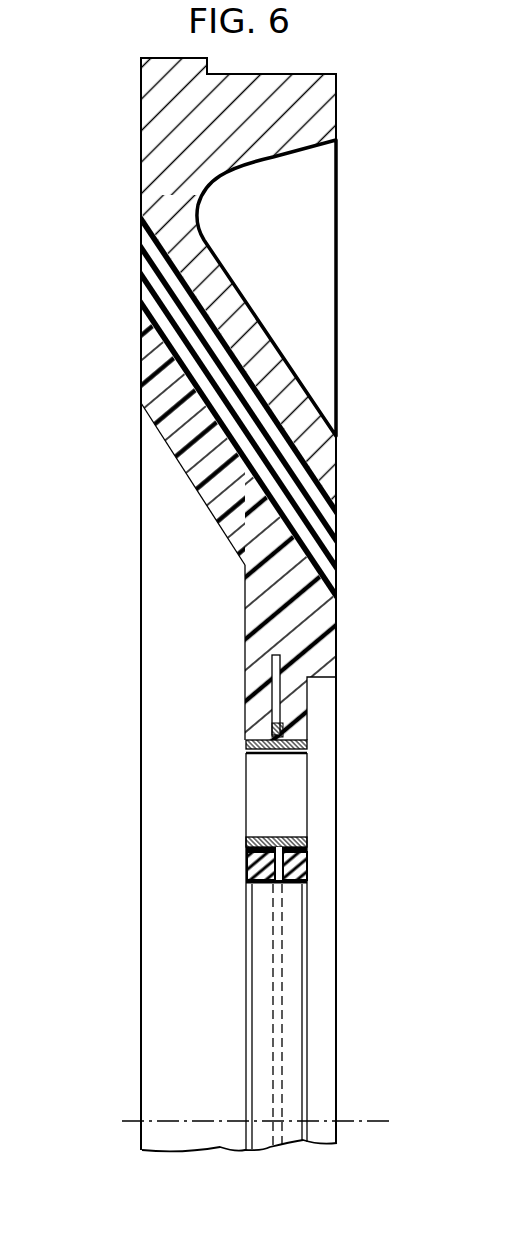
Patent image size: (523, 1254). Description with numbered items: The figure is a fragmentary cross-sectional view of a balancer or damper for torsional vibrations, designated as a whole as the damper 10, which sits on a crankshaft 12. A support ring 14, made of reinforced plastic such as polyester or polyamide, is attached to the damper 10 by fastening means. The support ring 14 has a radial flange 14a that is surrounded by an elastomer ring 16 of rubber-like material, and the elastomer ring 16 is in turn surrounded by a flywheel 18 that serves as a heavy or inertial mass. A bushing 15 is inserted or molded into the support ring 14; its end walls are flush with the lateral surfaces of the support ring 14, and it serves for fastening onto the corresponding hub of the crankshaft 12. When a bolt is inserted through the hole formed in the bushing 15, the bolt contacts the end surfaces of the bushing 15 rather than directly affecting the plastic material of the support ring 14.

The damper 10 is at (108, 304).
The crankshaft 12 is at (378, 1118).
The support ring 14 is at (323, 613).
The radial flange 14a is at (170, 441).
The bushing 15 is at (307, 745).
The elastomer ring 16 is at (320, 510).
The flywheel 18 is at (322, 122).